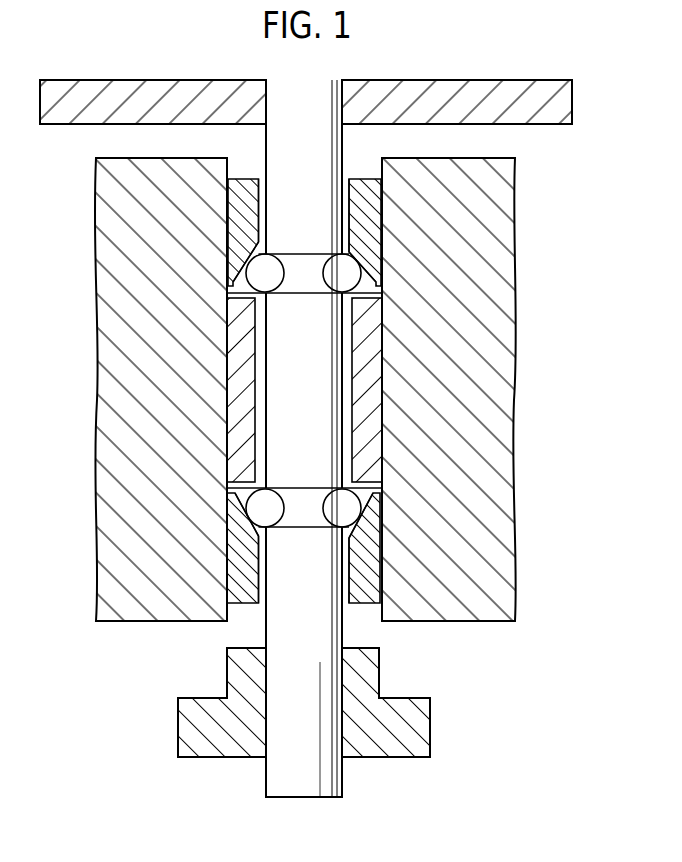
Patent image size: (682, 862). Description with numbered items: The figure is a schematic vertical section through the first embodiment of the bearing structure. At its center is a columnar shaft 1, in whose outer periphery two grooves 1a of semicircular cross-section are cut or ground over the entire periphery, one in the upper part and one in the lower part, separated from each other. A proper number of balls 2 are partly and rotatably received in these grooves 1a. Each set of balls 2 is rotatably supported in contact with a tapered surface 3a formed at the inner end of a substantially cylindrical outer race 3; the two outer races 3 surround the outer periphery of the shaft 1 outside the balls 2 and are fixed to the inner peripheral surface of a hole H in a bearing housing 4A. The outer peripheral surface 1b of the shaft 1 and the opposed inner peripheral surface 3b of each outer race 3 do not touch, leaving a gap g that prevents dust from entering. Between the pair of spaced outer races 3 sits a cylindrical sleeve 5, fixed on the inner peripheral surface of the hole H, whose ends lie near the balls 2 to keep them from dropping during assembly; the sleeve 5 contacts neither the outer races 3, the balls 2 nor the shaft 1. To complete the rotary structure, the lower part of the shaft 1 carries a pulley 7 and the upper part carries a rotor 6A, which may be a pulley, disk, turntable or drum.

The columnar shaft 1 is at (308, 412).
The grooves 1a is at (280, 527).
The outer peripheral surface of the shaft 1b is at (343, 197).
The balls 2 is at (267, 293).
The outer races 3 is at (232, 211).
The tapered surfaces 3a is at (366, 273).
The inner peripheral surface of the outer race 3b is at (347, 228).
The bearing housing 4A is at (495, 433).
The cylindrical sleeve 5 is at (370, 358).
The rotor 6A is at (482, 90).
The pulley 7 is at (423, 732).
The hole H is at (358, 128).
The gap g is at (264, 162).